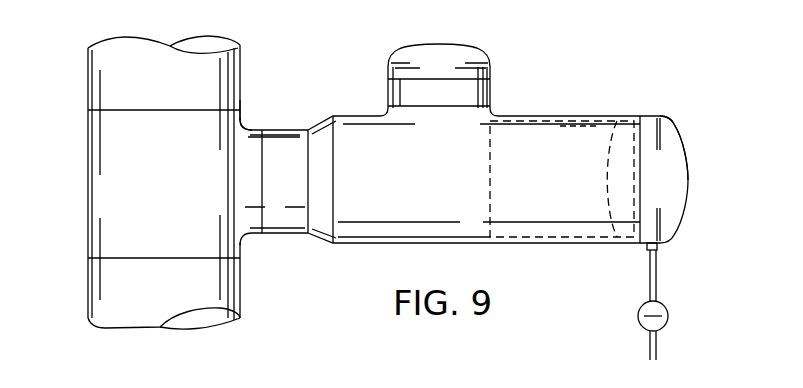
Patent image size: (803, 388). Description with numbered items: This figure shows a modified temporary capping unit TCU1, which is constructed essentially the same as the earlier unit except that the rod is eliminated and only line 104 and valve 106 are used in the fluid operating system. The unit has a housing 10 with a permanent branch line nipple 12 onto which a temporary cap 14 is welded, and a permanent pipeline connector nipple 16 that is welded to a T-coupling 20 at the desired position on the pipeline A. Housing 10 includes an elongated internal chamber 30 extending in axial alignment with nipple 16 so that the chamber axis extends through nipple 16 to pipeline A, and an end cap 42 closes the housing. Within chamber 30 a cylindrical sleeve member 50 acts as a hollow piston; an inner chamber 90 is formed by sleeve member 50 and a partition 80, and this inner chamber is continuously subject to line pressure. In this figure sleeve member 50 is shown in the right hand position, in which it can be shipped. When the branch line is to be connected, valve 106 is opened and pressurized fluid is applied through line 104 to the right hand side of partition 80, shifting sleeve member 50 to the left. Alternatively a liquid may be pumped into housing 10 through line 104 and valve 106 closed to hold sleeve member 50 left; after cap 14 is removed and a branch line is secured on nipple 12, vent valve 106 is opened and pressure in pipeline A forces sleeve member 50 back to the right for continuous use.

The T-coupling 20 is at (97, 214).
The pipeline A is at (242, 64).
The pipeline connector nipple 16 is at (280, 128).
The temporary capping unit TCU1 is at (540, 115).
The housing 10 is at (592, 113).
The internal chamber 30 is at (352, 224).
The branch line nipple 12 is at (483, 92).
The temporary cap 14 is at (462, 55).
The inner chamber 90 is at (500, 158).
The sleeve member 50 is at (577, 128).
The partition 80 is at (606, 182).
The end cap 42 is at (686, 154).
The line 104 is at (658, 276).
The vent valve 106 is at (668, 312).